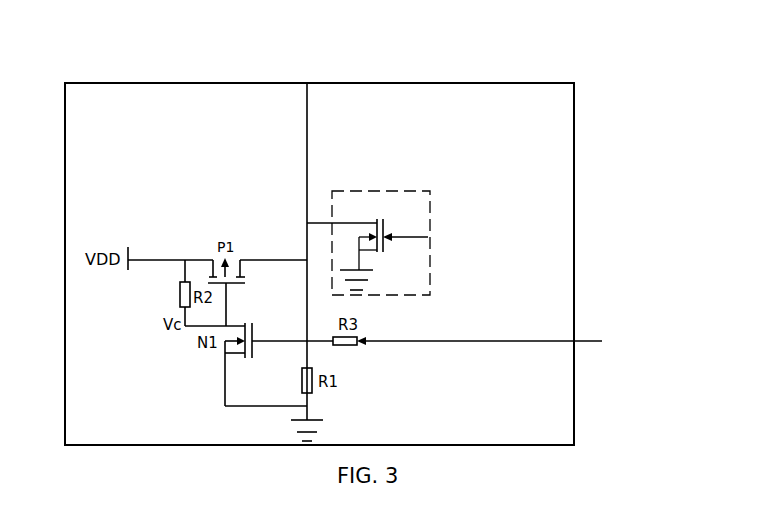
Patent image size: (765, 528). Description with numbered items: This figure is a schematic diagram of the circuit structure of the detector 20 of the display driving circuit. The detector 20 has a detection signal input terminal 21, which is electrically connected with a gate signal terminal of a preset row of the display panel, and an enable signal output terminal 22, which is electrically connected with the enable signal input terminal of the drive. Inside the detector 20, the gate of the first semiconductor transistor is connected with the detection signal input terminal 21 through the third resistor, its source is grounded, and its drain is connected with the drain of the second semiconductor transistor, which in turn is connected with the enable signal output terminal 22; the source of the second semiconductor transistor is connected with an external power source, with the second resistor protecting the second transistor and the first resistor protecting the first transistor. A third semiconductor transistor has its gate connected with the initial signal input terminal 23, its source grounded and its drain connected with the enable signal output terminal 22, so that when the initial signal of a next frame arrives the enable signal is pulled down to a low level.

The detector 20 is at (207, 83).
The detection signal input terminal 21 is at (574, 341).
The enable signal output terminal 22 is at (306, 83).
The initial signal input terminal 23 is at (430, 200).